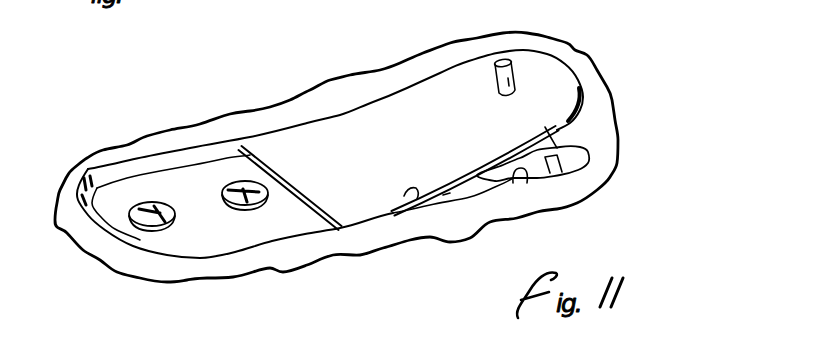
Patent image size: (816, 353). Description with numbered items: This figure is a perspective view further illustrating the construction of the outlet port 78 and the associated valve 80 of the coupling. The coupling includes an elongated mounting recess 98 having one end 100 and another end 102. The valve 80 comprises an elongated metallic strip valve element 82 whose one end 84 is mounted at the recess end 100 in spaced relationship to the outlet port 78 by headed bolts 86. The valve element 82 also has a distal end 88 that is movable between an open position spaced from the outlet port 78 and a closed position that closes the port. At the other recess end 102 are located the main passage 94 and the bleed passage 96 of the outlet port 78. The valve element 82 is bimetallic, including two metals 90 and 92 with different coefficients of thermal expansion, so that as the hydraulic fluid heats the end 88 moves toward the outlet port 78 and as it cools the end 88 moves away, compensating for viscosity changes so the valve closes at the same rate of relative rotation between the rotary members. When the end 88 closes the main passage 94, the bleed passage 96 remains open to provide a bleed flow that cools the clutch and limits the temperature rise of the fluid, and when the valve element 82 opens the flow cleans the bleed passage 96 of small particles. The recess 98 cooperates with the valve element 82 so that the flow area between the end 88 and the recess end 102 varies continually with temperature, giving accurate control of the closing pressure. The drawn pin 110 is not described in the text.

The outlet port 78 is at (550, 173).
The valve 80 is at (609, 55).
The strip valve element 82 is at (321, 172).
The one end 84 is at (193, 183).
The headed bolts 86 is at (137, 204).
The distal end 88 is at (553, 57).
The metal 90 is at (410, 196).
The metal 92 is at (447, 193).
The main passage 94 is at (535, 183).
The bleed passage 96 is at (557, 148).
The mounting recess 98 is at (271, 135).
The one end of recess 100 is at (88, 169).
The other end of recess 102 is at (558, 163).
The pin 110 is at (495, 66).